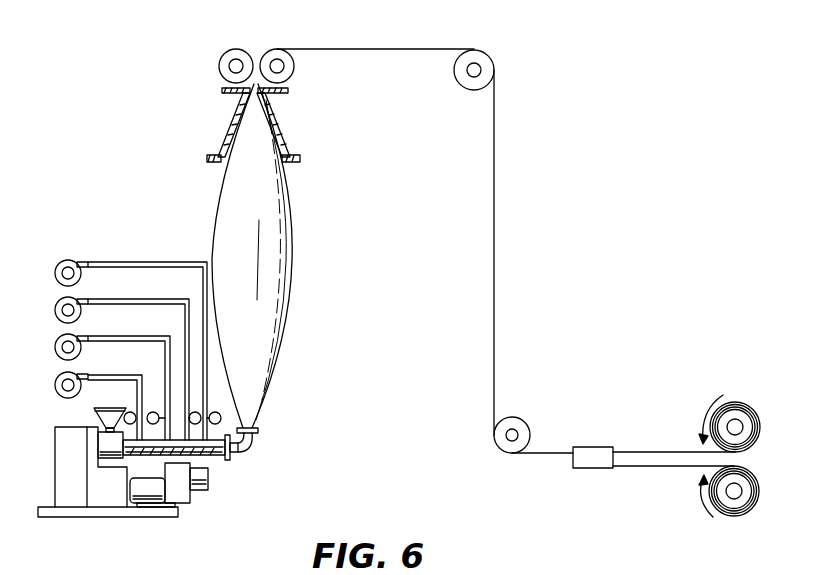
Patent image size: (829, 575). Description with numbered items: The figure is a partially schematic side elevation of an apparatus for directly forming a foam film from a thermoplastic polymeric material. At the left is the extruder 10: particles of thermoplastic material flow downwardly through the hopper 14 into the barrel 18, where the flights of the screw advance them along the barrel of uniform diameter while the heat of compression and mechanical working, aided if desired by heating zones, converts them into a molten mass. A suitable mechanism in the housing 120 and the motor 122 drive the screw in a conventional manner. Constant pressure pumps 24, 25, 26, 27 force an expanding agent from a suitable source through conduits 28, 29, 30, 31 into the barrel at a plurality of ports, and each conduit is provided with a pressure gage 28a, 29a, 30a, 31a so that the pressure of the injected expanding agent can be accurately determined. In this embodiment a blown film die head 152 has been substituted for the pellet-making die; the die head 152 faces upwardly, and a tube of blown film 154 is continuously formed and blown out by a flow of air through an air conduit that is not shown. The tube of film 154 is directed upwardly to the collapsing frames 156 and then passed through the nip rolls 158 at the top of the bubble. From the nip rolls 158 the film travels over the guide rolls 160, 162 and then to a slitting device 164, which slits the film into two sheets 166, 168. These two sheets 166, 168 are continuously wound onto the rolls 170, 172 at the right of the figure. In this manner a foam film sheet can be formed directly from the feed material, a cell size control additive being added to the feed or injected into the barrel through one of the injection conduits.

The extruder 10 is at (127, 457).
The hopper 14 is at (93, 413).
The barrel 18 is at (206, 452).
The blower 24 is at (55, 272).
The blower 25 is at (55, 309).
The blower 26 is at (55, 346).
The blower 27 is at (55, 384).
The conduit 28 is at (144, 262).
The conduit 29 is at (143, 300).
The conduit 30 is at (140, 337).
The conduit 31 is at (113, 375).
The pressure gage 28a is at (220, 417).
The pressure gage 29a is at (199, 413).
The pressure gage 30a is at (153, 412).
The pressure gage 31a is at (132, 412).
The housing 120 is at (63, 478).
The motor 122 is at (198, 478).
The blown film die head 152 is at (246, 438).
The tube of blown film 154 is at (280, 248).
The collapsing frames 156 is at (227, 117).
The nip rolls 158 is at (268, 48).
The guide roll 160 is at (467, 80).
The guide roll 162 is at (515, 422).
The slitting device 164 is at (605, 430).
The sheet 166 is at (643, 452).
The sheet 168 is at (663, 467).
The roll 170 is at (737, 425).
The roll 172 is at (740, 491).